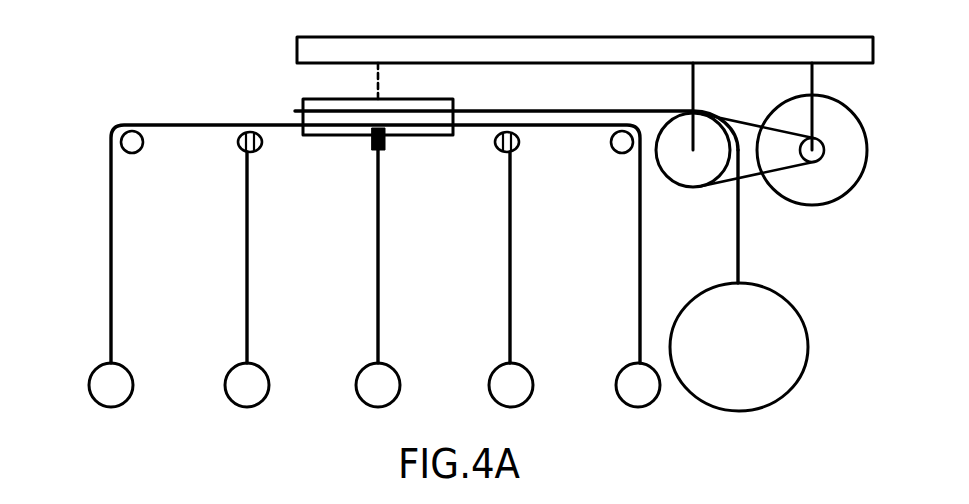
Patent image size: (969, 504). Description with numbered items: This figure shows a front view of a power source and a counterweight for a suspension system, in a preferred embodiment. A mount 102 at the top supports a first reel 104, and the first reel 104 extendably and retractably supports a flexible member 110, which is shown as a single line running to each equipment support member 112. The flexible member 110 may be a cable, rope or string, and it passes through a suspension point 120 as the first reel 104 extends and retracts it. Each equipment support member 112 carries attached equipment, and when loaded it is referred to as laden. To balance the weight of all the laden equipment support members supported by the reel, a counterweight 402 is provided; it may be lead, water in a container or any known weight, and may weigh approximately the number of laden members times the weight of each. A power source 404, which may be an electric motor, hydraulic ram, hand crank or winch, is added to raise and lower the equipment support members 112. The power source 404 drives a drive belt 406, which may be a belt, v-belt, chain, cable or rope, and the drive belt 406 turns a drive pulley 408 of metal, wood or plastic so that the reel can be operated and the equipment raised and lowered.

The mount 102 is at (297, 49).
The first reel 104 is at (303, 100).
The flexible member 110 is at (248, 313).
The equipment support member 112 is at (500, 368).
The suspension point 120 is at (112, 146).
The counterweight 402 is at (803, 318).
The power source 404 is at (847, 195).
The drive belt 406 is at (672, 120).
The drive pulley 408 is at (748, 124).